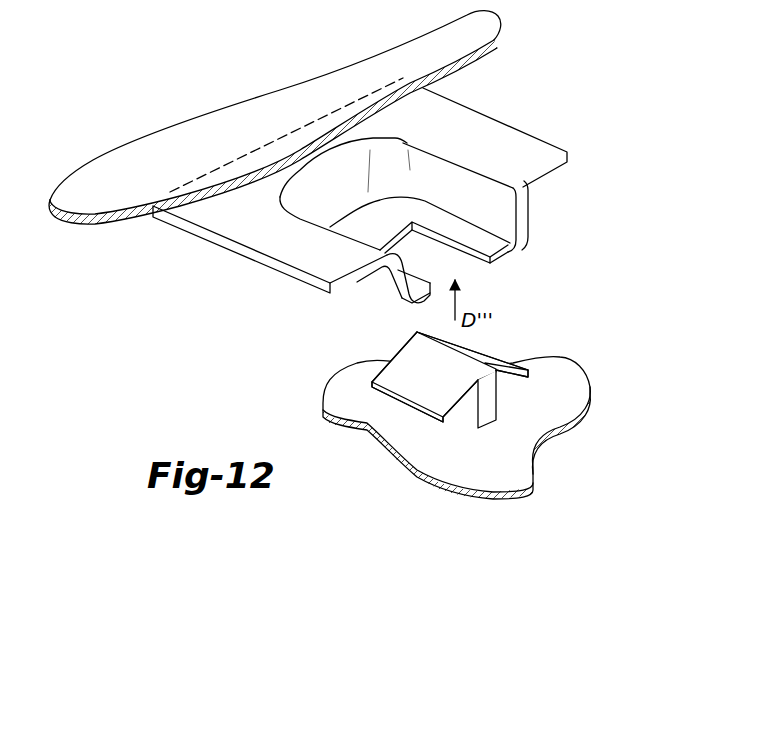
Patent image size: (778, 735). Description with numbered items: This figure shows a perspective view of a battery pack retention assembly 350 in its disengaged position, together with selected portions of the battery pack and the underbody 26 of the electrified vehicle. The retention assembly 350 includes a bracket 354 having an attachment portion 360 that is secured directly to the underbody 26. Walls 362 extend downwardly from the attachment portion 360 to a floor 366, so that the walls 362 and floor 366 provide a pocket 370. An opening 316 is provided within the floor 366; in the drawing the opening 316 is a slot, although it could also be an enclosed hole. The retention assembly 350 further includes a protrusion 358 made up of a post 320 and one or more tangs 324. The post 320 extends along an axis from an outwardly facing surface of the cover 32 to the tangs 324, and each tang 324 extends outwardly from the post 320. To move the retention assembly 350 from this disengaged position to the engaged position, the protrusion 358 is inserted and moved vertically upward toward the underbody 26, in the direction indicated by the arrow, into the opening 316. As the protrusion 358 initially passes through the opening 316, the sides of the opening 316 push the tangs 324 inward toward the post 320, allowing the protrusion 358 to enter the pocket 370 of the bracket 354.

The underbody 26 is at (175, 145).
The cover 32 is at (476, 432).
The opening 316 is at (482, 288).
The post 320 is at (474, 411).
The tangs 324 is at (417, 370).
The retention assembly 350 is at (407, 157).
The bracket 354 is at (527, 153).
The protrusion 358 is at (488, 402).
The attachment portion 360 is at (230, 245).
The walls 362 is at (497, 203).
The floor 366 is at (483, 246).
The pocket 370 is at (396, 178).